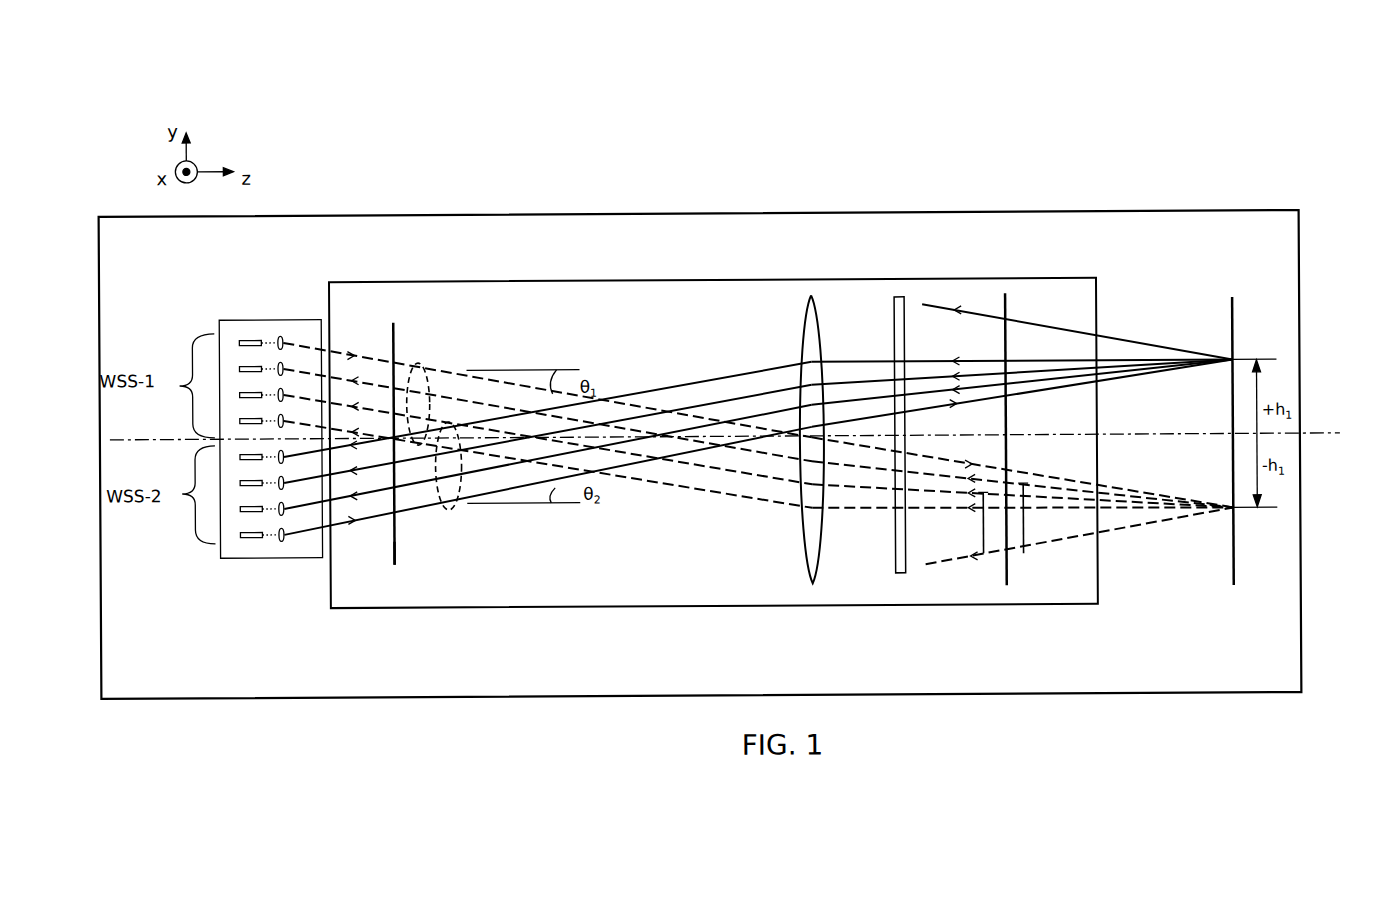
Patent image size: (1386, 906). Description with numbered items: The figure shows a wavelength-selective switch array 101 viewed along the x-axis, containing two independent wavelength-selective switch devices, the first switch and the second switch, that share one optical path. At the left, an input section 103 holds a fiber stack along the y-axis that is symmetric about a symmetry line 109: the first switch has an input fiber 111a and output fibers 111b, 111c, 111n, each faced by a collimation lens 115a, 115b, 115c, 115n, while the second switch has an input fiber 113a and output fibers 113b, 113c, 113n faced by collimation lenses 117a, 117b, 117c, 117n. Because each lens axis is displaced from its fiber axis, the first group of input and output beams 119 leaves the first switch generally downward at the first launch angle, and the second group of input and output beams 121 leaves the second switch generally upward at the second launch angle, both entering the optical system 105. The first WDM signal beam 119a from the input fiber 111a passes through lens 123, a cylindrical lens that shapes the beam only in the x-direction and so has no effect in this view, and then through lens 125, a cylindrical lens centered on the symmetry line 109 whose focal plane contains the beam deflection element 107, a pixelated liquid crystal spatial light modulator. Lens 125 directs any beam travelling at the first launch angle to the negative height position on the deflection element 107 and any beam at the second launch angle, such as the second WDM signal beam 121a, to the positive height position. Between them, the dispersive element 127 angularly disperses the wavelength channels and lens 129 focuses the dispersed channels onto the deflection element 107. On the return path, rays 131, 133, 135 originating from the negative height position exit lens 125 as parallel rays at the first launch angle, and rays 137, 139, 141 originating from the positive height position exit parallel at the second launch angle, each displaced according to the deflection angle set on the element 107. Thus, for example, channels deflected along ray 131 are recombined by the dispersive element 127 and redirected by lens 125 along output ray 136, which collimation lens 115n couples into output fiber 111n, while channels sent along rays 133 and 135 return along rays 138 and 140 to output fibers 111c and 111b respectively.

The WSS array 101 is at (1063, 95).
The input section 103 is at (263, 318).
The optical system 105 is at (620, 607).
The beam deflection element 107 is at (1233, 300).
The symmetry line 109 is at (744, 436).
The input fiber 111a is at (257, 338).
The output fiber 111b is at (247, 364).
The output fiber 111c is at (247, 390).
The output fiber 111n is at (247, 416).
The input fiber 113a is at (253, 535).
The output fiber 113b is at (247, 509).
The output fiber 113c is at (245, 483).
The output fiber 113n is at (245, 457).
The collimation lens 115a is at (282, 334).
The collimation lens 115b is at (282, 361).
The collimation lens 115c is at (282, 387).
The collimation lens 115n is at (282, 413).
The collimation lens 117a is at (282, 538).
The collimation lens 117b is at (282, 512).
The collimation lens 117c is at (282, 486).
The collimation lens 117n is at (282, 460).
The first group of input and output beams 119 is at (419, 361).
The first WDM signal beam 119a is at (372, 358).
The second group of input and output beams 121 is at (447, 510).
The second WDM signal beam 121a is at (393, 566).
The lens 123 is at (397, 540).
The lens 125 is at (814, 296).
The dispersive element 127 is at (905, 298).
The lens 129 is at (1007, 295).
The ray 131 is at (940, 510).
The ray 133 is at (983, 555).
The ray 135 is at (1023, 555).
The output ray 136 is at (677, 486).
The ray 137 is at (1047, 363).
The ray 138 is at (720, 469).
The ray 139 is at (1077, 371).
The ray 140 is at (768, 454).
The ray 141 is at (1097, 376).